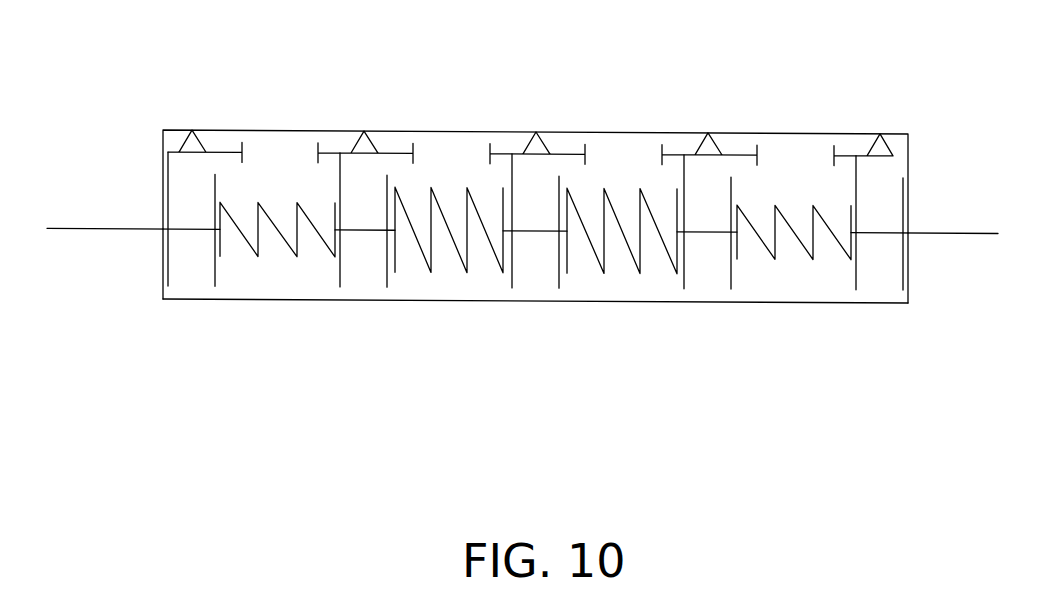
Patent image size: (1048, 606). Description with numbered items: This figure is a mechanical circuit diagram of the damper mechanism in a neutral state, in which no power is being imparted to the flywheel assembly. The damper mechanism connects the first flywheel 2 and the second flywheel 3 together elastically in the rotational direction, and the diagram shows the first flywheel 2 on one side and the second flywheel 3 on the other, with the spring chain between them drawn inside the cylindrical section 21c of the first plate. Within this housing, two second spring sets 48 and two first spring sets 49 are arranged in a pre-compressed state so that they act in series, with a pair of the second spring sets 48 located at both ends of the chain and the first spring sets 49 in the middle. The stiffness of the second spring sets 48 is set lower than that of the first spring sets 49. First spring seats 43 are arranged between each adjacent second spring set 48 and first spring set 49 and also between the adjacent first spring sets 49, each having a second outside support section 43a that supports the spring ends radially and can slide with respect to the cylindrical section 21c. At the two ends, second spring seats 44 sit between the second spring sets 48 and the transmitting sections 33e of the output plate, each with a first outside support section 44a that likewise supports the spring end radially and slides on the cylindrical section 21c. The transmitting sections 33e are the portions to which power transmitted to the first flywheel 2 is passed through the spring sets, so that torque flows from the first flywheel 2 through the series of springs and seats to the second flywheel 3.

The first flywheel 2 is at (87, 213).
The second flywheel 3 is at (945, 218).
The cylindrical section 21c is at (175, 128).
The transmitting section 33e is at (162, 280).
The first spring seat 43 is at (363, 279).
The second outside support section 43a is at (398, 149).
The second spring seat 44 is at (195, 286).
The first outside support section 44a is at (227, 150).
The second spring set 48 is at (280, 191).
The first spring set 49 is at (446, 174).